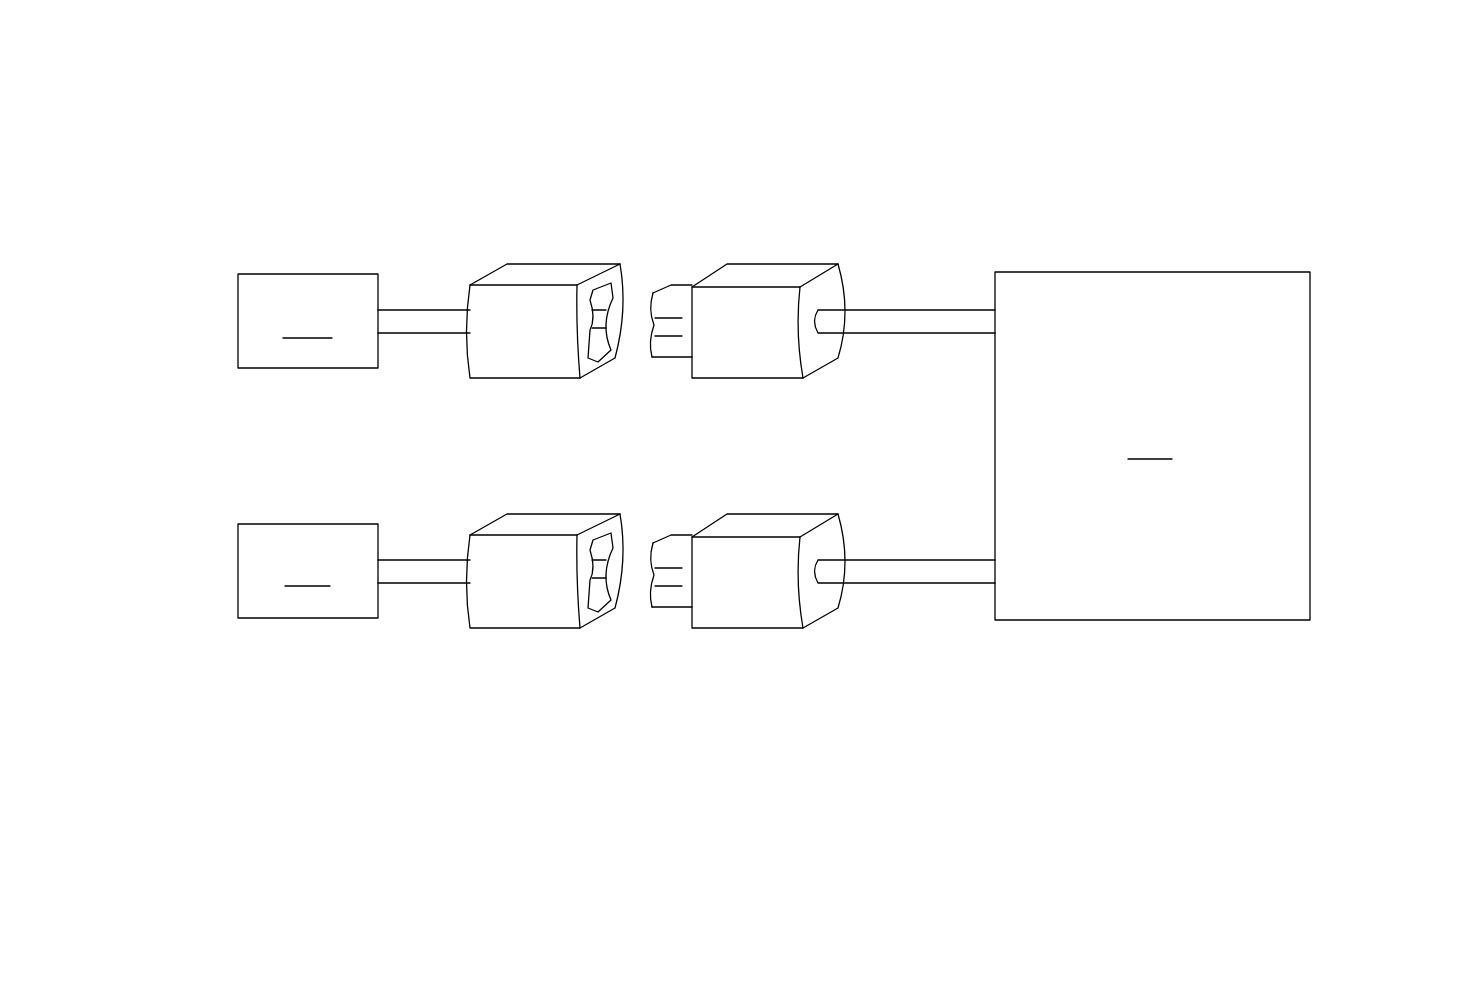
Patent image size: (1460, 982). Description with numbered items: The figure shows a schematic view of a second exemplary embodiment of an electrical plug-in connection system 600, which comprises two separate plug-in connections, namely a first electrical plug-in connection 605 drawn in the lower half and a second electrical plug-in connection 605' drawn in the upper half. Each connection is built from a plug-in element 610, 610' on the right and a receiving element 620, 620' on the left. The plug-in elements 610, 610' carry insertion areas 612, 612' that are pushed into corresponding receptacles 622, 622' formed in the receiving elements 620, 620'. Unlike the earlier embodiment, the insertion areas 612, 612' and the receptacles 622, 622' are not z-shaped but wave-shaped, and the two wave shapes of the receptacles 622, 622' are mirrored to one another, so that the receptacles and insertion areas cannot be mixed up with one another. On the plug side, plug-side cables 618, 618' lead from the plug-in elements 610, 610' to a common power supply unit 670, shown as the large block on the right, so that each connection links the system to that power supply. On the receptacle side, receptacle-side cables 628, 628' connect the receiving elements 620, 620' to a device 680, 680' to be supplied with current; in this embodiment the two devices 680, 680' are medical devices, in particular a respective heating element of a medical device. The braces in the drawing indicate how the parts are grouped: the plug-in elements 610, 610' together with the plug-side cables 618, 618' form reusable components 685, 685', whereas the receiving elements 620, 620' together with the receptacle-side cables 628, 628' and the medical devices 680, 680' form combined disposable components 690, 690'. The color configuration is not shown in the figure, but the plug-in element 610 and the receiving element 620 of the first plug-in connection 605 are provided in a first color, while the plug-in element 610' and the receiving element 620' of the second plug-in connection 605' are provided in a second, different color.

The electrical plug-in connection system 600 is at (1363, 180).
The first electrical plug-in connection 605 is at (694, 565).
The second electrical plug-in connection 605' is at (741, 468).
The plug-in element 610 is at (768, 619).
The plug-in element 610' is at (768, 271).
The insertion area 612 is at (664, 629).
The insertion area 612' is at (676, 261).
The plug-side cable 618 is at (905, 642).
The plug-side cable 618' is at (905, 249).
The receiving element 620 is at (548, 619).
The receiving element 620' is at (561, 271).
The receptacle 622 is at (601, 628).
The receptacle 622' is at (621, 263).
The receptacle-side cable 628 is at (423, 642).
The receptacle-side cable 628' is at (424, 249).
The power supply unit 670 is at (1152, 446).
The device 680 is at (308, 571).
The device 680' is at (308, 321).
The reusable component 685 is at (815, 686).
The reusable component 685' is at (813, 205).
The combined disposable component 690 is at (604, 686).
The combined disposable component 690' is at (604, 205).